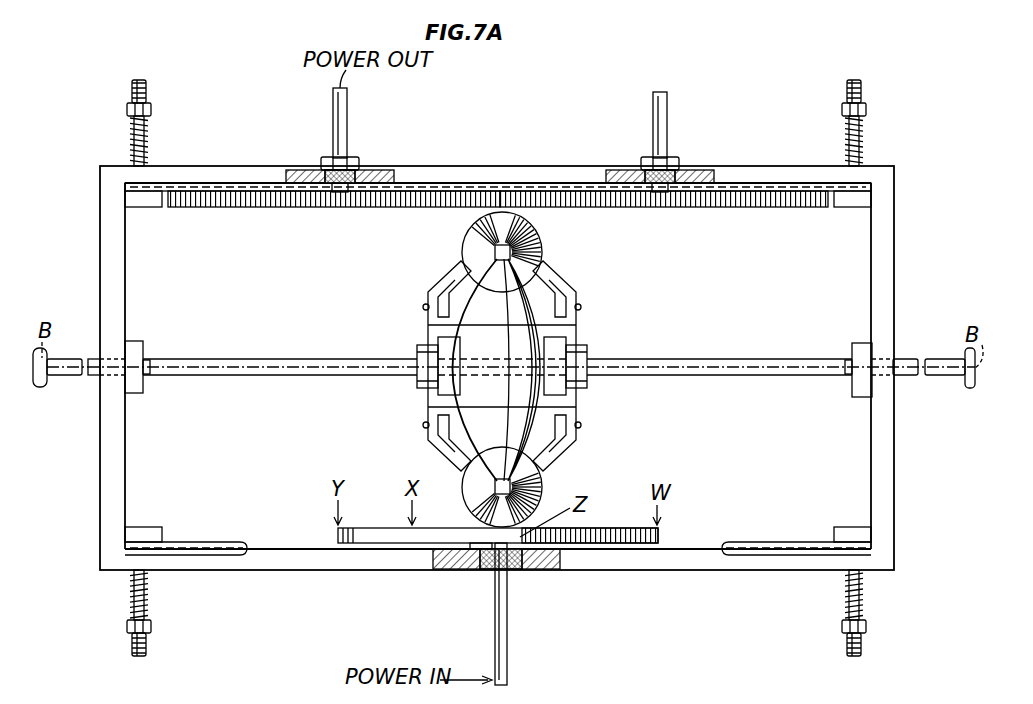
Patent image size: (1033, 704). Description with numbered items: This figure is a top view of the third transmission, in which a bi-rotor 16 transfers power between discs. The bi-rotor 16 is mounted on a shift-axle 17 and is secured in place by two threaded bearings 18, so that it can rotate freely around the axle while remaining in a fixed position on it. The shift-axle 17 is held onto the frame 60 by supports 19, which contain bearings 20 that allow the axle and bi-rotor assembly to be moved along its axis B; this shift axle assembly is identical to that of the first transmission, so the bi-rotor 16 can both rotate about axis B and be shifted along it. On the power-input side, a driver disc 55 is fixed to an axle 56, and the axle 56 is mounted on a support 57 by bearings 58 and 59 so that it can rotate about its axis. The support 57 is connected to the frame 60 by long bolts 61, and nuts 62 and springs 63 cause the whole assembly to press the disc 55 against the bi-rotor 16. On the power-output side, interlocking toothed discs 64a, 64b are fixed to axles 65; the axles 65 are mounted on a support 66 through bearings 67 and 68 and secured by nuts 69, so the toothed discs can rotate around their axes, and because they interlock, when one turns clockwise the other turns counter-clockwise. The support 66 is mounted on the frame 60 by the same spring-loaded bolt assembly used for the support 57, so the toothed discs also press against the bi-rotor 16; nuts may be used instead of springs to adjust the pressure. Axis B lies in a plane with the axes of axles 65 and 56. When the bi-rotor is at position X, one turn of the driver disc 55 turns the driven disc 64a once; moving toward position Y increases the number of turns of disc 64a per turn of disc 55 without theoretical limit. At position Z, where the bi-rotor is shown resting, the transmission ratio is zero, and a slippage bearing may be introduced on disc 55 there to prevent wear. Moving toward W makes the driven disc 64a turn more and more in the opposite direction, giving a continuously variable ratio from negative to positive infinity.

The bi-rotor 16 is at (590, 326).
The shift-axle 17 is at (93, 377).
The threaded bearings 18 is at (418, 392).
The supports 19 is at (136, 342).
The bearings 20 is at (150, 358).
The disc 55 is at (638, 546).
The axle 56 is at (508, 634).
The support 57 is at (598, 566).
The bearing 58 is at (515, 570).
The bearing 59 is at (478, 550).
The frame 60 is at (882, 459).
The long bolts 61 is at (148, 87).
The nuts 62 is at (127, 111).
The springs 63 is at (148, 127).
The toothed disc 64a is at (356, 206).
The toothed disc 64b is at (752, 206).
The axles 65 is at (333, 110).
The support 66 is at (538, 180).
The bearings 67 is at (312, 172).
The bearings 68 is at (334, 192).
The nuts 69 is at (357, 160).